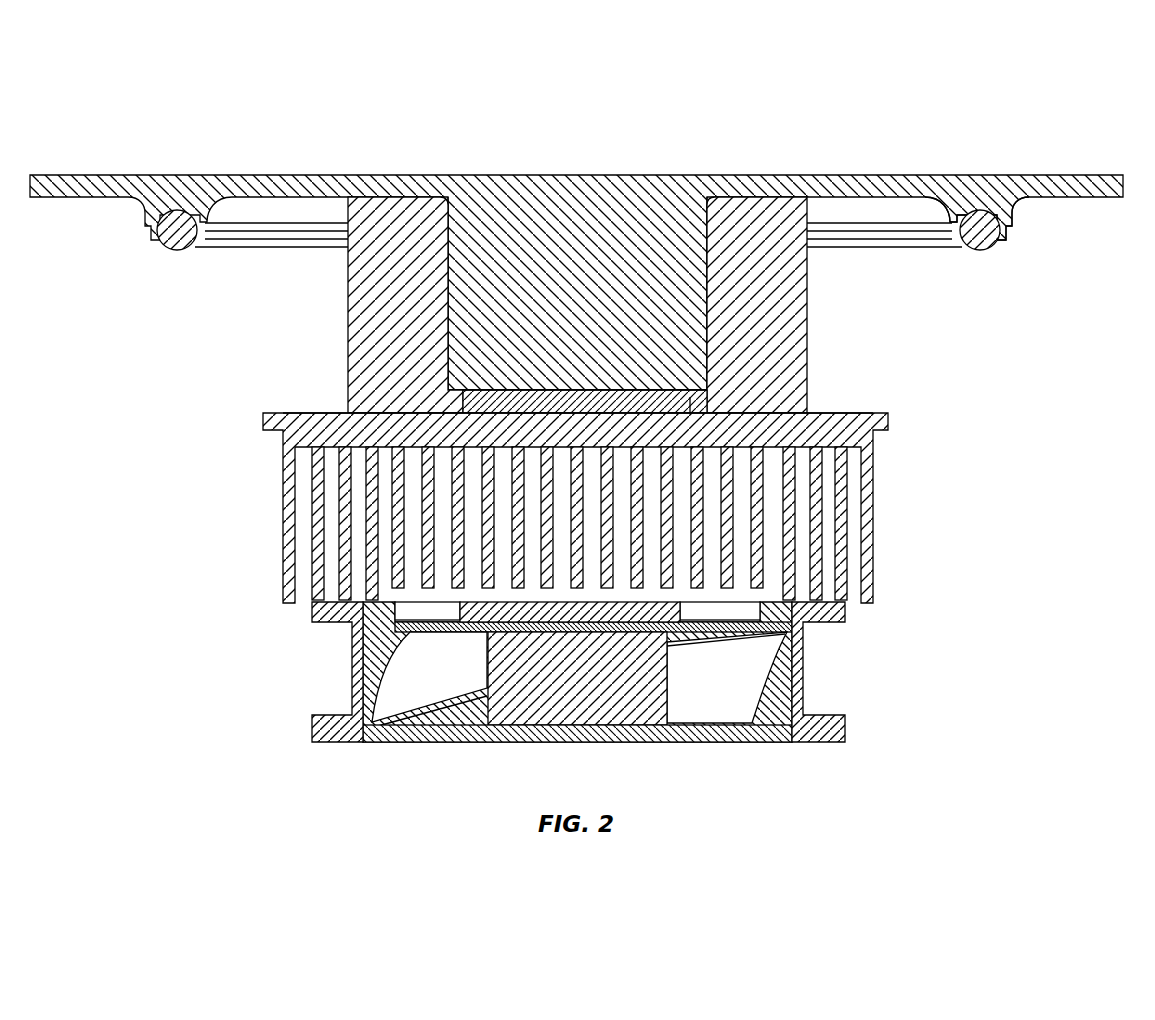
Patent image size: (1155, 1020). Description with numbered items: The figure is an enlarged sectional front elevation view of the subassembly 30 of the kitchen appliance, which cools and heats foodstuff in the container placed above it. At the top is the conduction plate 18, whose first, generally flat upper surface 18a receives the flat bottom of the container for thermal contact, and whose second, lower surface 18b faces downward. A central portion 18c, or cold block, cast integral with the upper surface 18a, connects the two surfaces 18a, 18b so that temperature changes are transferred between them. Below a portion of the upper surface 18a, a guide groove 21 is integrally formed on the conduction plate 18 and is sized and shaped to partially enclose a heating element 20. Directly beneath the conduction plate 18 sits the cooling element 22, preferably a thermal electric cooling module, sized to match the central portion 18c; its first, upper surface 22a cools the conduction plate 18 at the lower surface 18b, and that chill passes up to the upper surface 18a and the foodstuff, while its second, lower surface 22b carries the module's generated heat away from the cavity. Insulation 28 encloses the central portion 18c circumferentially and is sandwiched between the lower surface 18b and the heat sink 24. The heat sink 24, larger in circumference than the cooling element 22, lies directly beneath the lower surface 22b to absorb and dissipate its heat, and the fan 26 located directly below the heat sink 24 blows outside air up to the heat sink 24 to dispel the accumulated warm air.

The conduction plate 18 is at (512, 175).
The first, generally flat upper surface 18a is at (987, 178).
The second, lower surface 18b is at (633, 390).
The central portion 18c is at (473, 316).
The heating element 20 is at (172, 237).
The guide groove 21 is at (1012, 212).
The cooling element 22 is at (682, 402).
The first, upper surface of the cooling element 22a is at (512, 392).
The second, lower surface of the cooling element 22b is at (527, 413).
The heat sink 24 is at (873, 553).
The fan 26 is at (547, 700).
The insulation 28 is at (797, 316).
The subassembly 30 is at (868, 142).